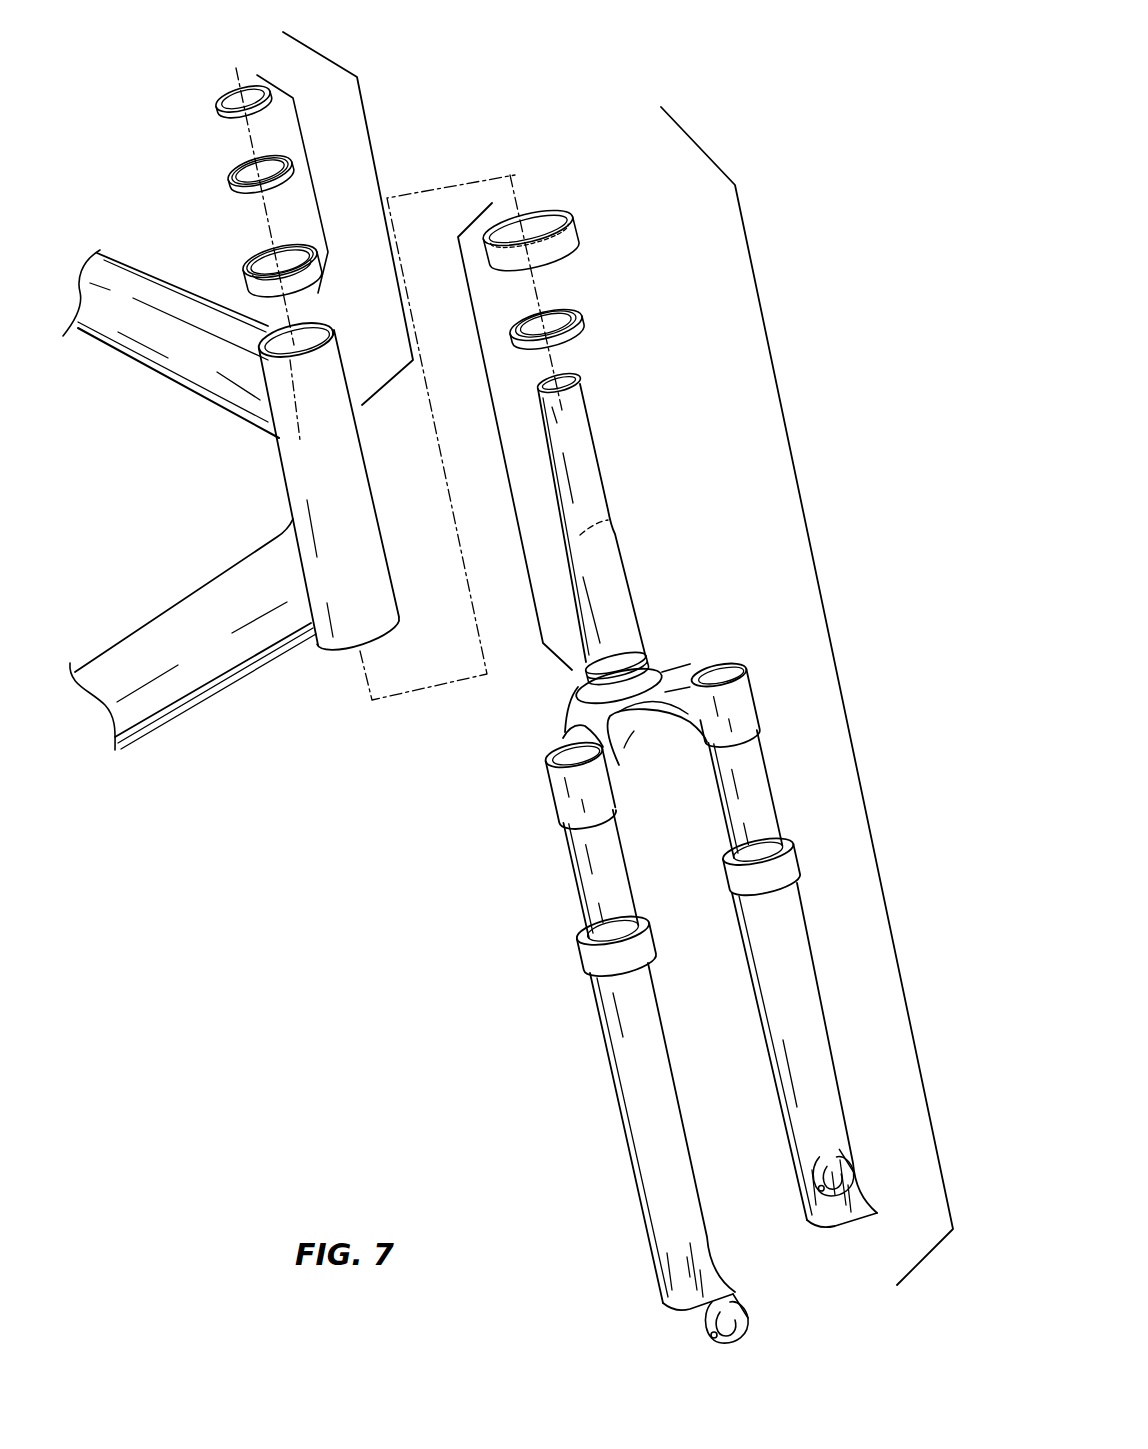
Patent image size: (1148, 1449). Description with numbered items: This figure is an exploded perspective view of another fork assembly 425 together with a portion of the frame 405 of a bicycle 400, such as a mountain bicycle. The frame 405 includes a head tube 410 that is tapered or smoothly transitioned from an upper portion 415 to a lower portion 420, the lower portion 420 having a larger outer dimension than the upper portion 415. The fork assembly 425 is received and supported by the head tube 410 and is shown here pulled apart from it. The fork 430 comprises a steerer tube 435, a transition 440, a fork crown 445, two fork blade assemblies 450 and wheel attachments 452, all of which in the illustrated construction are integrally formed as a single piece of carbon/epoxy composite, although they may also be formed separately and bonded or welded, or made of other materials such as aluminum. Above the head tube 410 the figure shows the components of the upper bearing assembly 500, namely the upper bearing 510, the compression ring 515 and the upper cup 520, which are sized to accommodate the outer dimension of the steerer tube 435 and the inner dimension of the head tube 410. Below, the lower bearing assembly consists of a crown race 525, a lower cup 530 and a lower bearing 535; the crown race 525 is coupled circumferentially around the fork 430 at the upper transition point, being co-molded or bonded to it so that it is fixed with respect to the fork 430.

The bicycle 400 is at (207, 508).
The frame 405 is at (170, 373).
The head tube 410 is at (343, 652).
The upper portion 415 is at (397, 352).
The lower portion 420 is at (464, 606).
The fork assembly 425 is at (433, 116).
The fork 430 is at (542, 903).
The steerer tube 435 is at (683, 450).
The transition 440 is at (657, 673).
The fork crown 445 is at (563, 734).
The fork blade assemblies 450 is at (773, 910).
The wheel attachments 452 is at (862, 1253).
The upper bearing assembly 500 is at (368, 181).
The upper bearing 510 is at (230, 170).
The compression ring 515 is at (228, 90).
The upper cup 520 is at (246, 262).
The crown race 525 is at (648, 660).
The lower cup 530 is at (566, 219).
The lower bearing 535 is at (573, 306).